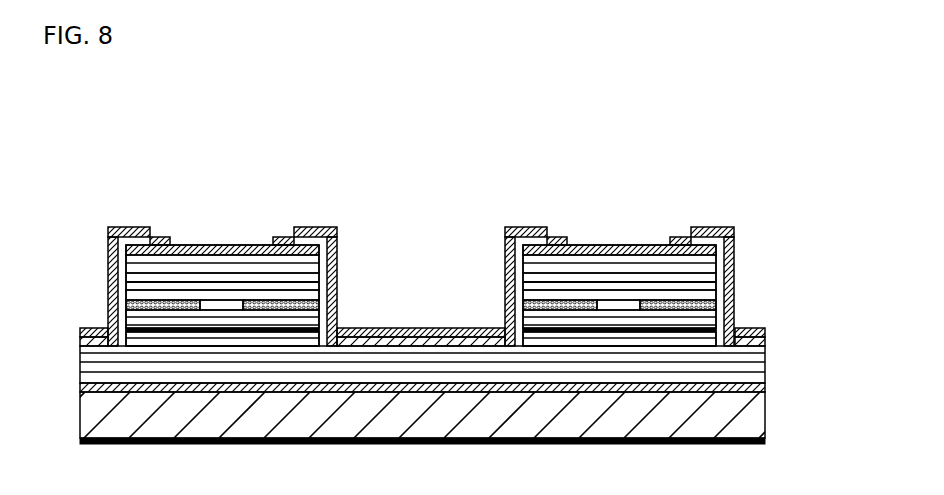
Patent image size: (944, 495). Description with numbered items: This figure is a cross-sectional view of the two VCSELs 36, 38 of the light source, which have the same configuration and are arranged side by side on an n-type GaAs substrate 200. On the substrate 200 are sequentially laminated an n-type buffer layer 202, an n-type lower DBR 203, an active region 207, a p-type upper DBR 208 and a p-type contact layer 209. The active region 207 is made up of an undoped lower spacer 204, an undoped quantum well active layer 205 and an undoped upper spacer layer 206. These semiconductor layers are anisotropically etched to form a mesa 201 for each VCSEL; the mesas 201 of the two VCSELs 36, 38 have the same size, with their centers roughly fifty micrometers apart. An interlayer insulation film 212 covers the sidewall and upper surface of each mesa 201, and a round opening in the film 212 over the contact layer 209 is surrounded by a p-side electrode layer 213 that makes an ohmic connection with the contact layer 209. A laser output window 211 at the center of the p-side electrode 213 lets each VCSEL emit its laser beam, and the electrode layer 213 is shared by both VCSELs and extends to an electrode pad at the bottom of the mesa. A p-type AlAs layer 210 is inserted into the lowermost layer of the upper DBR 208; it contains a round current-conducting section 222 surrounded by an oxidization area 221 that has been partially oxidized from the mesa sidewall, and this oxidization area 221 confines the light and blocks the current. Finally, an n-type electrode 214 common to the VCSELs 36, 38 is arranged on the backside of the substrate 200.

The VCSEL 36 is at (265, 162).
The VCSEL 38 is at (668, 162).
The n-type GaAs substrate 200 is at (747, 420).
The mesa 201 is at (107, 255).
The n-type buffer layer 202 is at (768, 390).
The n-type lower DBR 203 is at (703, 358).
The undoped lower spacer 204 is at (720, 337).
The undoped quantum well active layer 205 is at (735, 318).
The undoped upper spacer layer 206 is at (735, 305).
The active region 207 is at (838, 273).
The p-type upper DBR 208 is at (735, 263).
The p-type contact layer 209 is at (735, 243).
The p-type AlAs layer 210 is at (735, 287).
The laser output window 211 is at (187, 237).
The interlayer insulation film 212 is at (733, 236).
The p-side electrode layer 213 is at (707, 228).
The n-type electrode 214 is at (767, 441).
The oxidization area 221 is at (108, 313).
The current-conducting section 222 is at (217, 307).